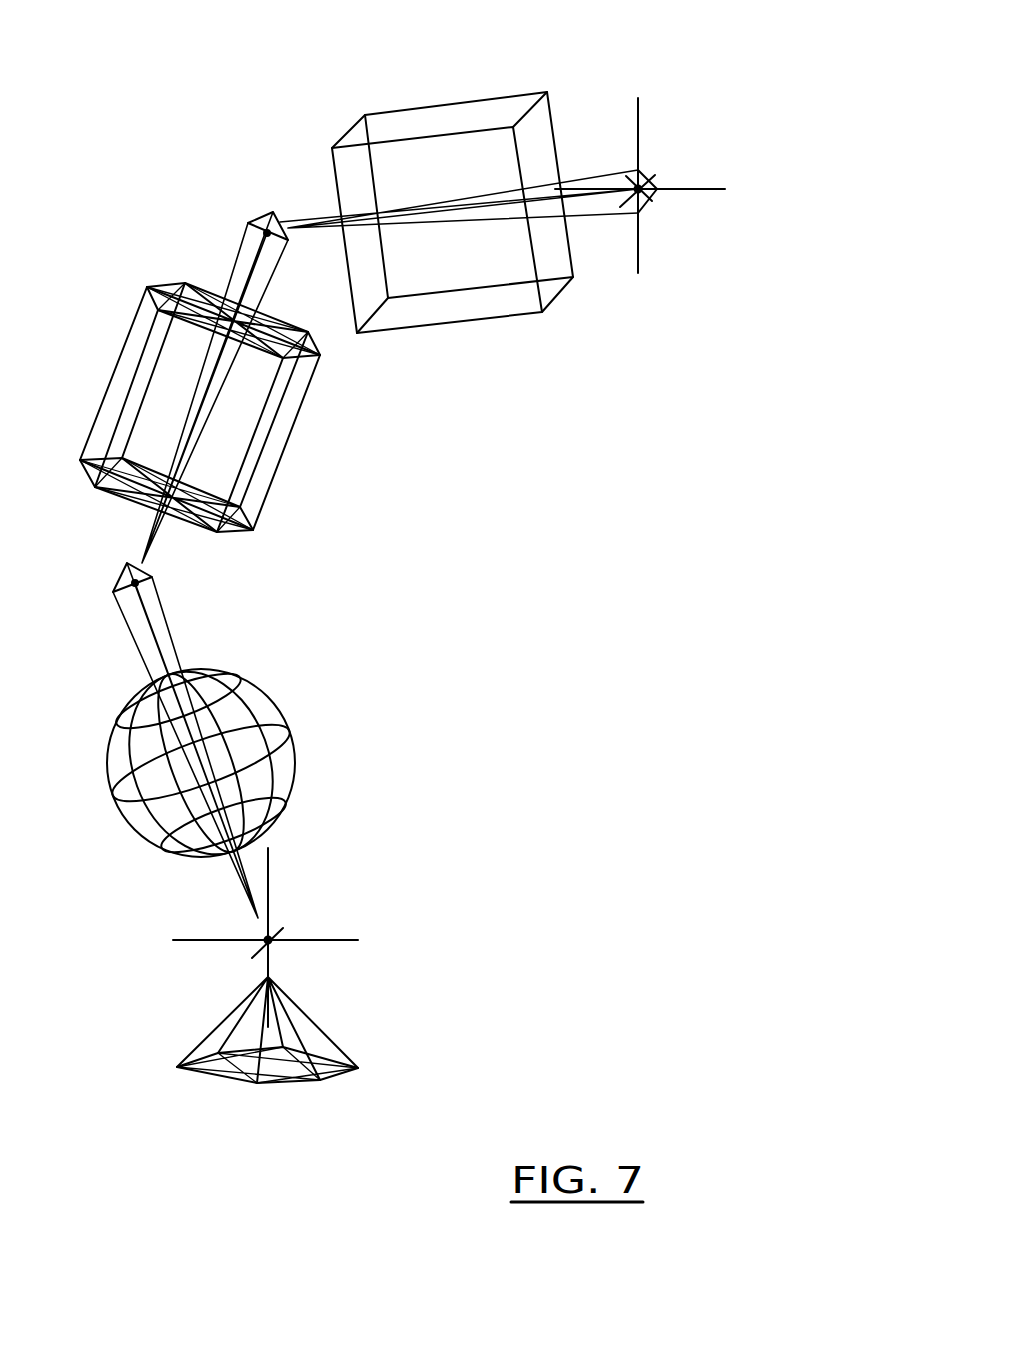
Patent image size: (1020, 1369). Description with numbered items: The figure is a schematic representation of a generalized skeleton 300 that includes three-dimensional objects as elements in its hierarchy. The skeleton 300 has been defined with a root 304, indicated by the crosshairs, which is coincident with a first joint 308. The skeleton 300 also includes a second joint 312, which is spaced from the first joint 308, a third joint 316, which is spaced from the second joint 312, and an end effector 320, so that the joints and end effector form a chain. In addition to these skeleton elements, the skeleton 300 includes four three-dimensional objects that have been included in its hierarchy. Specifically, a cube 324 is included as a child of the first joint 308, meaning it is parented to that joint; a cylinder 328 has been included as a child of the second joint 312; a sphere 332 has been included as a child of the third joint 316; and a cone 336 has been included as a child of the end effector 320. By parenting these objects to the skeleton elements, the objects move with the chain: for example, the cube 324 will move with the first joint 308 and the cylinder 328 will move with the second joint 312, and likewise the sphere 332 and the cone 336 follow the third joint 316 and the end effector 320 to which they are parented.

The skeleton 300 is at (568, 383).
The root 304 is at (638, 150).
The first joint 308 is at (646, 196).
The second joint 312 is at (273, 210).
The third joint 316 is at (143, 567).
The end effector 320 is at (273, 937).
The cube 324 is at (467, 112).
The cylinder 328 is at (125, 368).
The sphere 332 is at (285, 708).
The cone 336 is at (340, 1042).